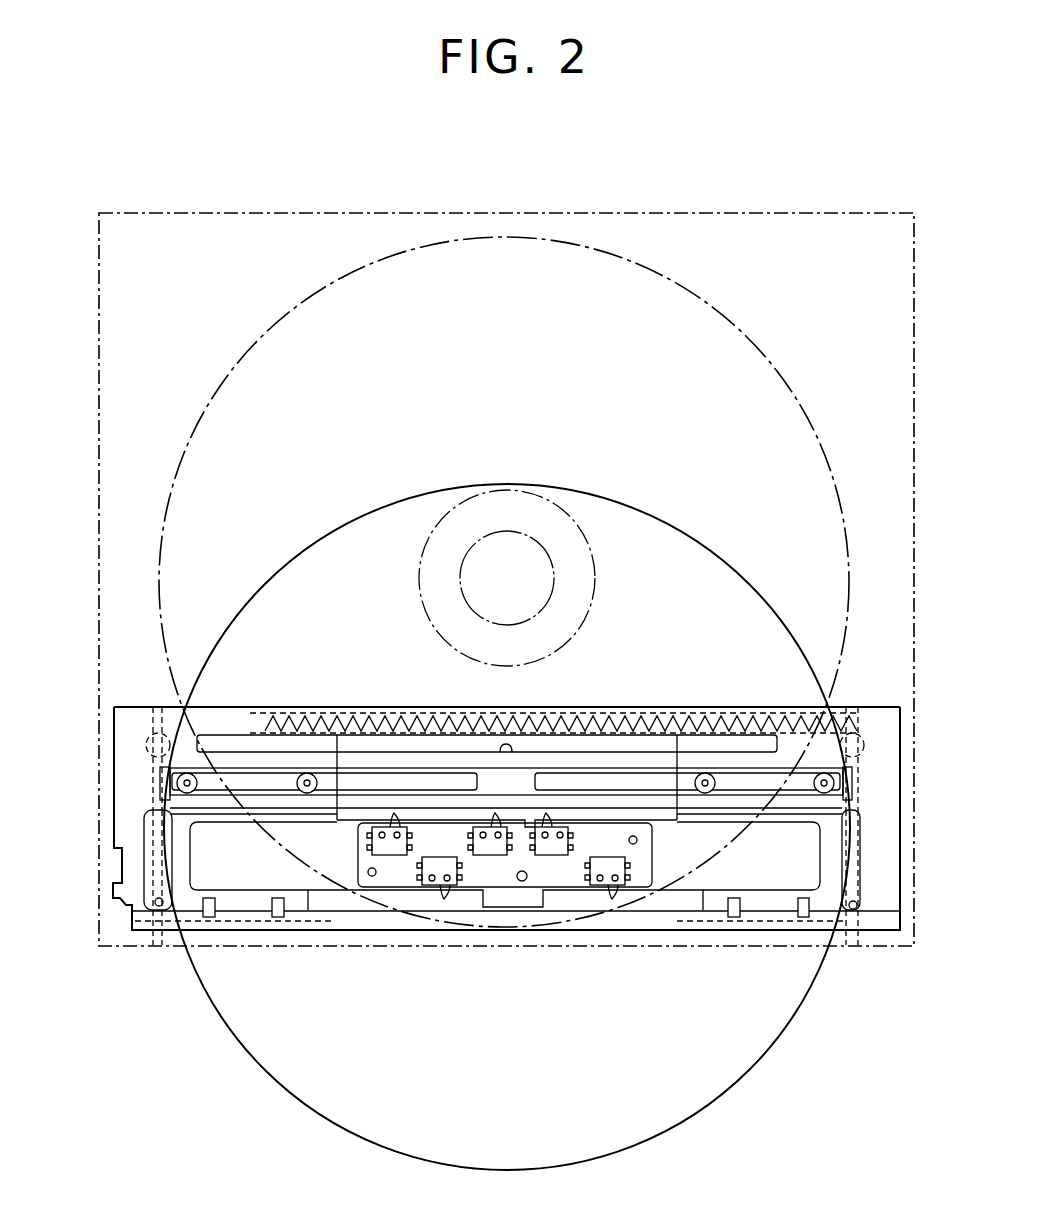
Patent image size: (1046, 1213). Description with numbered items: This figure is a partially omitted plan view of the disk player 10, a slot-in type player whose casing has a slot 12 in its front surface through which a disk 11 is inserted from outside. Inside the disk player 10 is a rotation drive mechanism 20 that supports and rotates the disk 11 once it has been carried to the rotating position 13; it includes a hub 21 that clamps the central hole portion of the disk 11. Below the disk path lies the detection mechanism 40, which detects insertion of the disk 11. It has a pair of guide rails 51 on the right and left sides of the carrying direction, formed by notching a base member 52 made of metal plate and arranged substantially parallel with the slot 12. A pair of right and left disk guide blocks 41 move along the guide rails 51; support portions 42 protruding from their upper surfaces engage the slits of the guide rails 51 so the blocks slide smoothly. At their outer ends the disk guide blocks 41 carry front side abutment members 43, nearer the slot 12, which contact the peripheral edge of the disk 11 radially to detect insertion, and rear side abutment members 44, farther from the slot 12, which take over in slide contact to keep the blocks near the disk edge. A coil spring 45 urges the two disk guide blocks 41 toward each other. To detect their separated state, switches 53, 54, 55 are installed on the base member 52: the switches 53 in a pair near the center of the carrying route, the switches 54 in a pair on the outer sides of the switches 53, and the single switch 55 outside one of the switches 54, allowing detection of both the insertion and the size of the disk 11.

The disk player 10 is at (206, 210).
The disk 11 is at (690, 1117).
The slot 12 is at (738, 948).
The rotating position 13 is at (753, 338).
The rotation drive mechanism 20 is at (547, 437).
The hub 21 is at (563, 515).
The detection mechanism 40 is at (115, 927).
The disk guide blocks 41 is at (160, 942).
The support portions 42 is at (307, 773).
The front side abutment members 43 is at (143, 888).
The rear side abutment members 44 is at (162, 733).
The coil spring 45 is at (402, 716).
The guide rails 51 is at (158, 774).
The base member 52 is at (118, 706).
The switches 53 is at (552, 855).
The switches 54 is at (445, 890).
The switch 55 is at (383, 857).